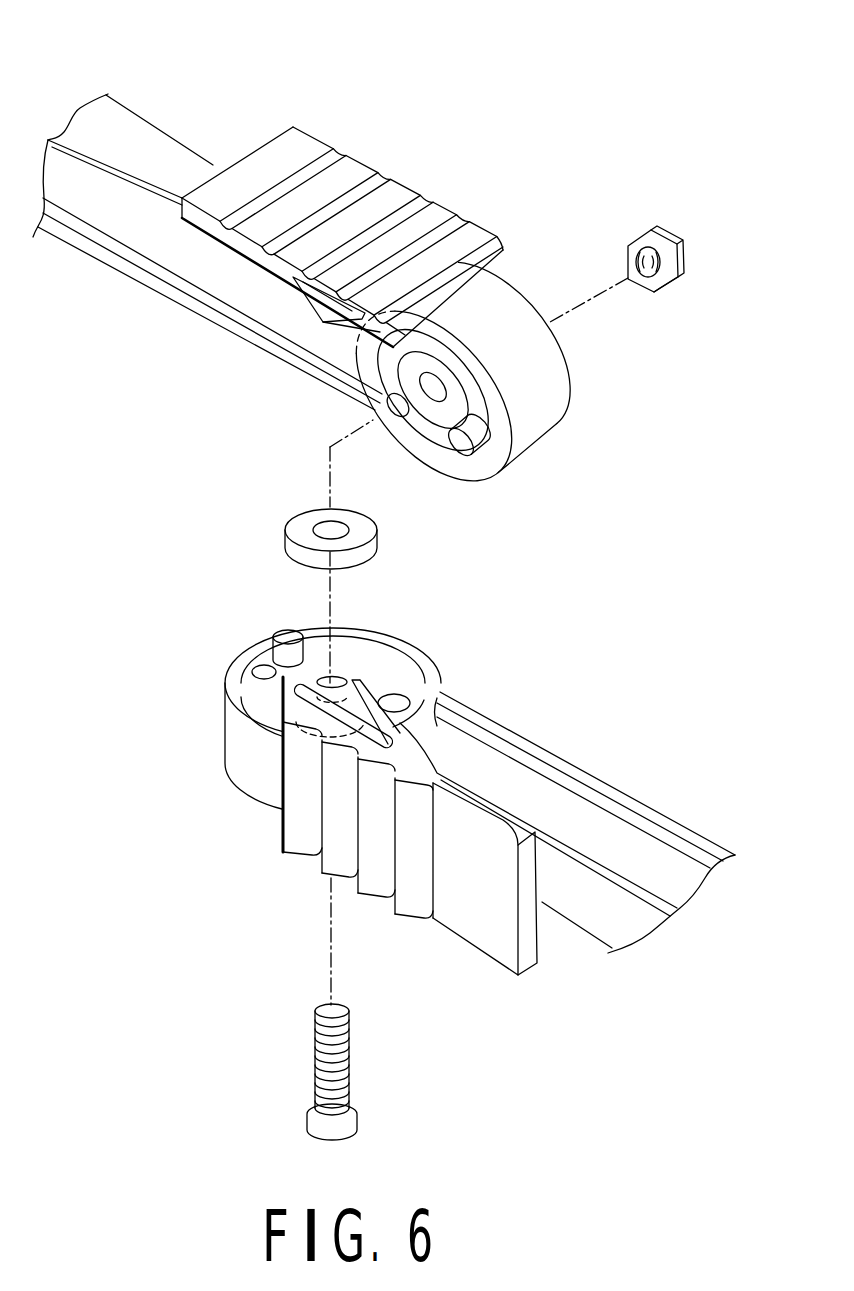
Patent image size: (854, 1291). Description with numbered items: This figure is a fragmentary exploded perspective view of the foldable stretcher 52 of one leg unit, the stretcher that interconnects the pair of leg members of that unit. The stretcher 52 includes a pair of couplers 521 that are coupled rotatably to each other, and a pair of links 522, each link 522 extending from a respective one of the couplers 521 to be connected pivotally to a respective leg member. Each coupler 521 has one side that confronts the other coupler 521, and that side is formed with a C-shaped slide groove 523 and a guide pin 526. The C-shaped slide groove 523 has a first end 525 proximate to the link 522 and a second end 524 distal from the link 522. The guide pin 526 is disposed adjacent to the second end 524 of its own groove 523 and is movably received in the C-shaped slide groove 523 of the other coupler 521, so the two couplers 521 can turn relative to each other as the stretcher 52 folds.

The foldable stretcher 52 is at (207, 129).
The coupler 521 is at (571, 414).
The link 522 is at (384, 490).
The C-shaped slide groove 523 is at (453, 343).
The second end 524 is at (448, 387).
The first end 525 is at (387, 402).
The guide pin 526 is at (486, 457).